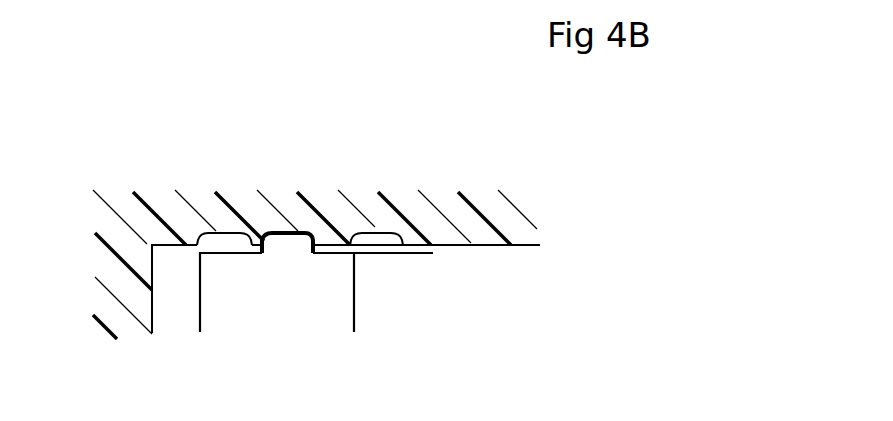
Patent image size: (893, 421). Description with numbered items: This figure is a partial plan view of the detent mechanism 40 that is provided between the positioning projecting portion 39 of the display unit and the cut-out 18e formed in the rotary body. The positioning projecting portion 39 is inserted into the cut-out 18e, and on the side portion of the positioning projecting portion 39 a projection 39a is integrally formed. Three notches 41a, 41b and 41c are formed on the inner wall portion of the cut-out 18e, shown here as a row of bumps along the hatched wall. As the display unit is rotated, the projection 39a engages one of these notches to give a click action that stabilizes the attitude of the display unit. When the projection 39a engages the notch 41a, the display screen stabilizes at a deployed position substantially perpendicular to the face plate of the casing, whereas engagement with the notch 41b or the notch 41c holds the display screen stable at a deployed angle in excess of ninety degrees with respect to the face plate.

The cut-out 18e is at (168, 265).
The projecting portion for positioning 39 is at (343, 308).
The projection 39a is at (285, 237).
The detent mechanism 40 is at (468, 270).
The notch 41a is at (372, 237).
The notch 41b is at (270, 237).
The notch 41c is at (223, 237).